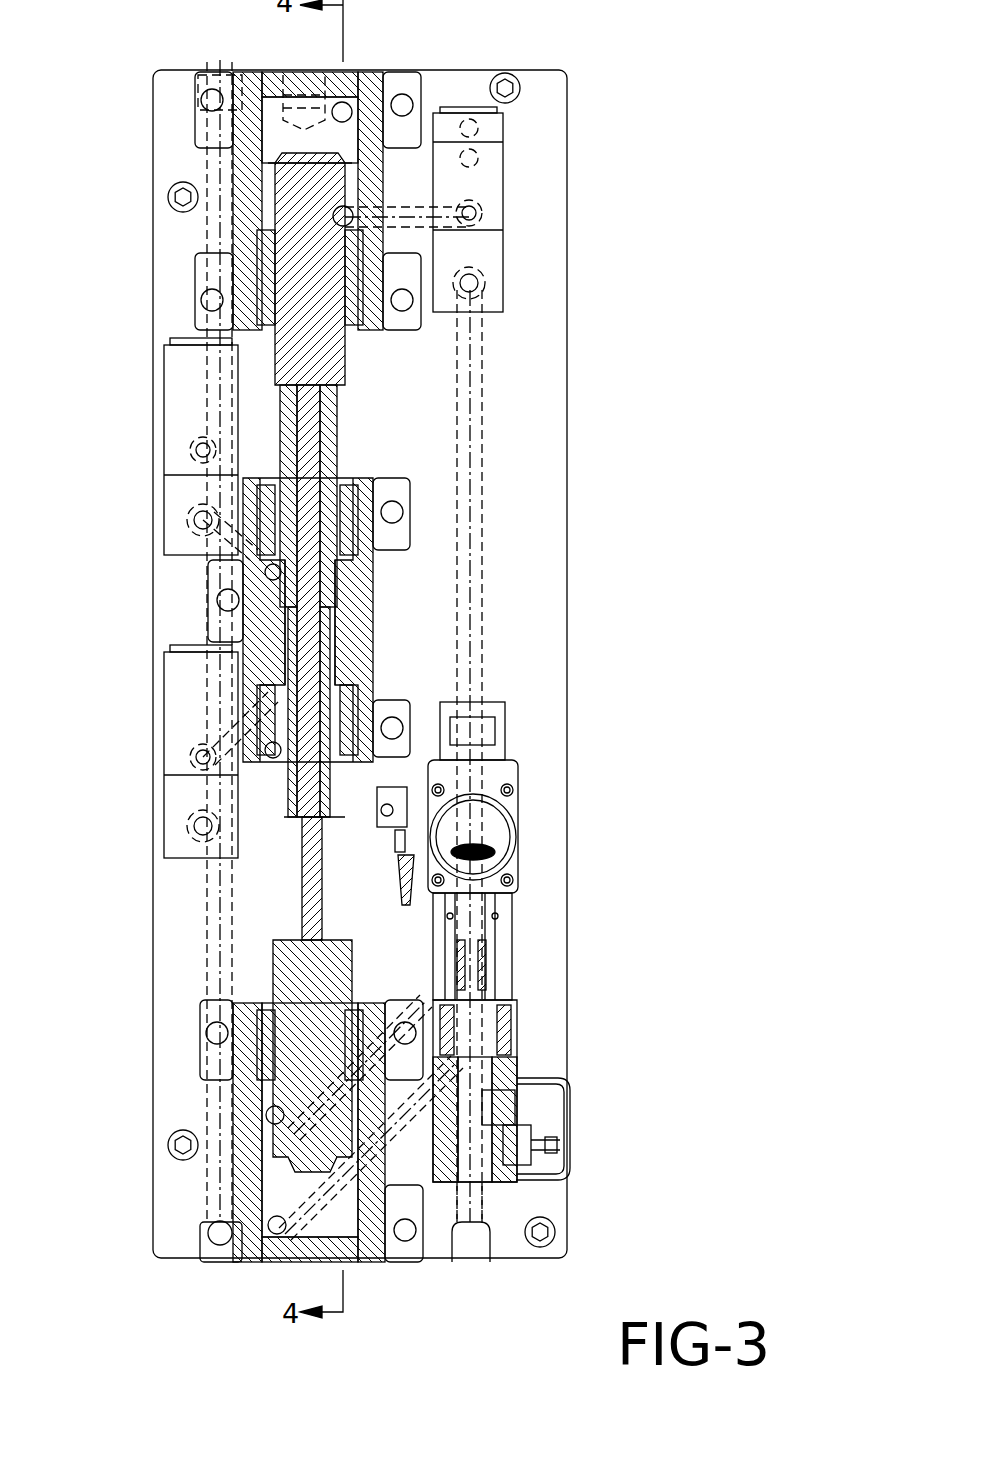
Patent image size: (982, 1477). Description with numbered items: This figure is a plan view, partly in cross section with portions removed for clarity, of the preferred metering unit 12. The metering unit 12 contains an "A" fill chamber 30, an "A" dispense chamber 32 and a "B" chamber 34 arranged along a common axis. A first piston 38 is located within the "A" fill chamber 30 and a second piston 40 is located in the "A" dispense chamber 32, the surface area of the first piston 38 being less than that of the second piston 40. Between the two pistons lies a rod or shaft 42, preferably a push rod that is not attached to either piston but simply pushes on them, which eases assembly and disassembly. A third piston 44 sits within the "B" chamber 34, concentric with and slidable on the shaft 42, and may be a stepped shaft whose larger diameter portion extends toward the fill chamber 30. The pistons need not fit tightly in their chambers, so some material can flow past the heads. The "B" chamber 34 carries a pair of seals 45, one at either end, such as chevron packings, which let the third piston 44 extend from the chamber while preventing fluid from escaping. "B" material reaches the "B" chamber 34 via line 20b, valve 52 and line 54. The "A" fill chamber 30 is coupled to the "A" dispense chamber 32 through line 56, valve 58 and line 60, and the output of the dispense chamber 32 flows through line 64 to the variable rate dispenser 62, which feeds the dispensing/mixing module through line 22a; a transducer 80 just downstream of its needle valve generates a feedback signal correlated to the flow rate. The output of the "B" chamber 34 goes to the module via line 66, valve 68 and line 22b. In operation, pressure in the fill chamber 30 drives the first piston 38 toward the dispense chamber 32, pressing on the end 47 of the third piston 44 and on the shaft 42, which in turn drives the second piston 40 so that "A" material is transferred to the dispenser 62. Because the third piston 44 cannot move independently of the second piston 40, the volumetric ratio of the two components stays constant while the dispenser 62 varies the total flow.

The metering unit 12 is at (574, 465).
The line 20b is at (205, 236).
The line 22a is at (468, 1243).
The line 22b is at (208, 926).
The "A" fill chamber 30 is at (280, 130).
The "A" dispense chamber 32 is at (338, 1215).
The "B" chamber 34 is at (277, 630).
The first piston 38 is at (320, 162).
The second piston 40 is at (333, 953).
The rod or shaft 42 is at (305, 868).
The third piston 44 is at (337, 610).
The seals 45 is at (352, 322).
The end of piston 47 is at (335, 392).
The valve 52 is at (164, 506).
The line 54 is at (233, 550).
The line 56 is at (407, 205).
The valve 58 is at (508, 153).
The line 60 is at (487, 382).
The variable rate dispenser 62 is at (530, 813).
The line 64 is at (293, 1257).
The line 66 is at (245, 704).
The valve 68 is at (164, 806).
The transducer 80 is at (522, 1160).